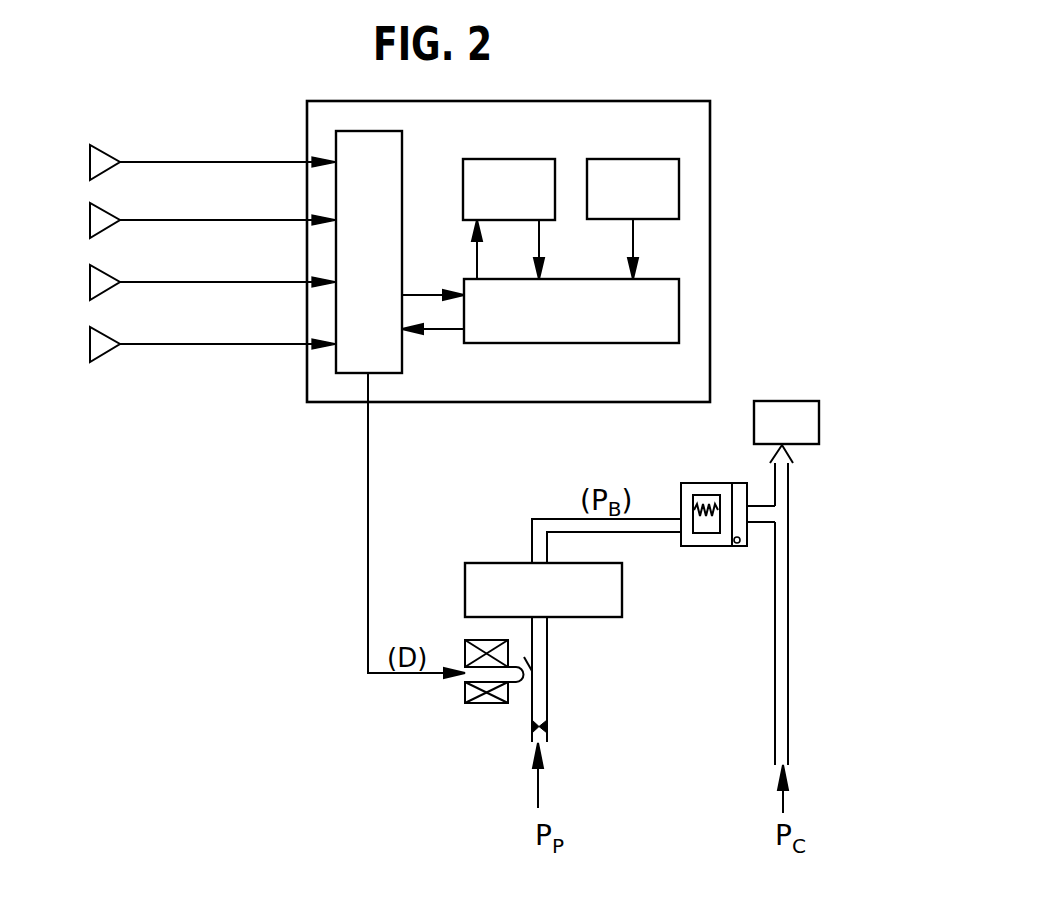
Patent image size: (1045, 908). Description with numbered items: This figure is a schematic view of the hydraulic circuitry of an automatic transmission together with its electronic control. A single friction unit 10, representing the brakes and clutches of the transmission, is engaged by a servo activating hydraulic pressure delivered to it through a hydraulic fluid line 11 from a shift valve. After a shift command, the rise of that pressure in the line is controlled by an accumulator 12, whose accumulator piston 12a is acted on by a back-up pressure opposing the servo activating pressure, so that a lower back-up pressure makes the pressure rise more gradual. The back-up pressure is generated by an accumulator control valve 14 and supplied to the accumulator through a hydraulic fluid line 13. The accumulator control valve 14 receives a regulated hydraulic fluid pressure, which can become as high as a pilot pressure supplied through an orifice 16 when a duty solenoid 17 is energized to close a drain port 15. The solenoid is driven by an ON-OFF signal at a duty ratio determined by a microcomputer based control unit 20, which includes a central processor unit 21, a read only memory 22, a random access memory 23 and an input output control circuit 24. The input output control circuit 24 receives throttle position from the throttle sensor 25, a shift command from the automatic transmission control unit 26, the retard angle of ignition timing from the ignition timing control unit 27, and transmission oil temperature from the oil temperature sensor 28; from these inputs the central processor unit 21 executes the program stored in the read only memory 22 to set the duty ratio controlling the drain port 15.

The friction unit 10 is at (819, 444).
The hydraulic fluid line 11 is at (788, 600).
The accumulator 12 is at (681, 484).
The accumulator piston 12a is at (737, 546).
The hydraulic fluid line 13 is at (528, 527).
The accumulator control valve 14 is at (465, 563).
The drain port 15 is at (530, 684).
The orifice 16 is at (548, 723).
The duty solenoid 17 is at (467, 705).
The microcomputer based control unit 20 is at (710, 101).
The central processor unit 21 is at (590, 343).
The read only memory 22 is at (620, 159).
The random access memory 23 is at (517, 159).
The input output control circuit 24 is at (403, 141).
The throttle sensor 25 is at (88, 154).
The automatic transmission control unit 26 is at (88, 216).
The ignition timing control unit 27 is at (88, 278).
The oil temperature sensor 28 is at (88, 338).